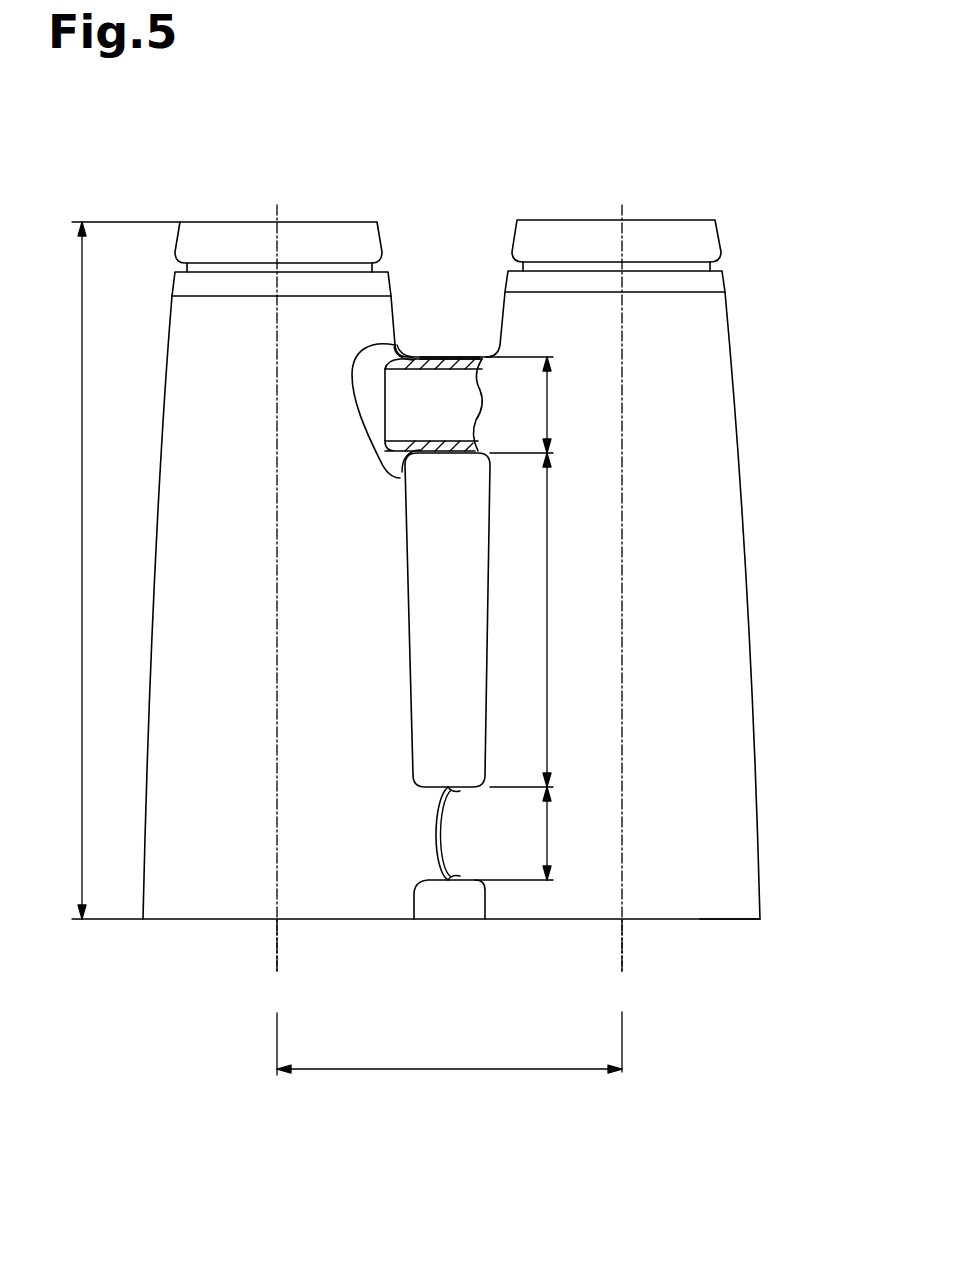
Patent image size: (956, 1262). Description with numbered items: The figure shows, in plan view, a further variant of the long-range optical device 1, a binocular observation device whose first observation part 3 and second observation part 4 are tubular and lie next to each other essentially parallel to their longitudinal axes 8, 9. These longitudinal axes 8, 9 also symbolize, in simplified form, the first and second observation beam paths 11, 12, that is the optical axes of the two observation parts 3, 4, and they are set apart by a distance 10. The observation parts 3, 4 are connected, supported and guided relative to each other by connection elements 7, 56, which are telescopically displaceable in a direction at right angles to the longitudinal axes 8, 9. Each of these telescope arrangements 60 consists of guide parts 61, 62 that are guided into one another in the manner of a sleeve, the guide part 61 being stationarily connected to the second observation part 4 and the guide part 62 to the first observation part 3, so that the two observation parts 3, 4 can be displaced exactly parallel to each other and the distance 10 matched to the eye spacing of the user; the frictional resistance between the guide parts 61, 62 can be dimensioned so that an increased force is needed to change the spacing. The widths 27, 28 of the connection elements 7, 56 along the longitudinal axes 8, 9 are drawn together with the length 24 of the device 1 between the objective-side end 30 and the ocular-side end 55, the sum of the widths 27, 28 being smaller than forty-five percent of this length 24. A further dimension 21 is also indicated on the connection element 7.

The long-range optical device 1 is at (702, 142).
The first observation part 3 is at (767, 352).
The second observation part 4 is at (150, 243).
The connection element 7 is at (449, 462).
The longitudinal axis 8 is at (278, 953).
The longitudinal axis 9 is at (623, 953).
The distance 10 is at (428, 1068).
The first observation beam path 11 is at (277, 625).
The second observation beam path 12 is at (622, 625).
The pivot length 21 is at (548, 634).
The length 24 is at (82, 508).
The width 27 is at (549, 410).
The width 28 is at (549, 846).
The objective-side end 30 is at (730, 920).
The ocular-side end 55 is at (323, 220).
The connection element 56 is at (456, 906).
The telescope arrangement 60 is at (437, 352).
The guide part 61 is at (422, 357).
The guide part 62 is at (418, 370).